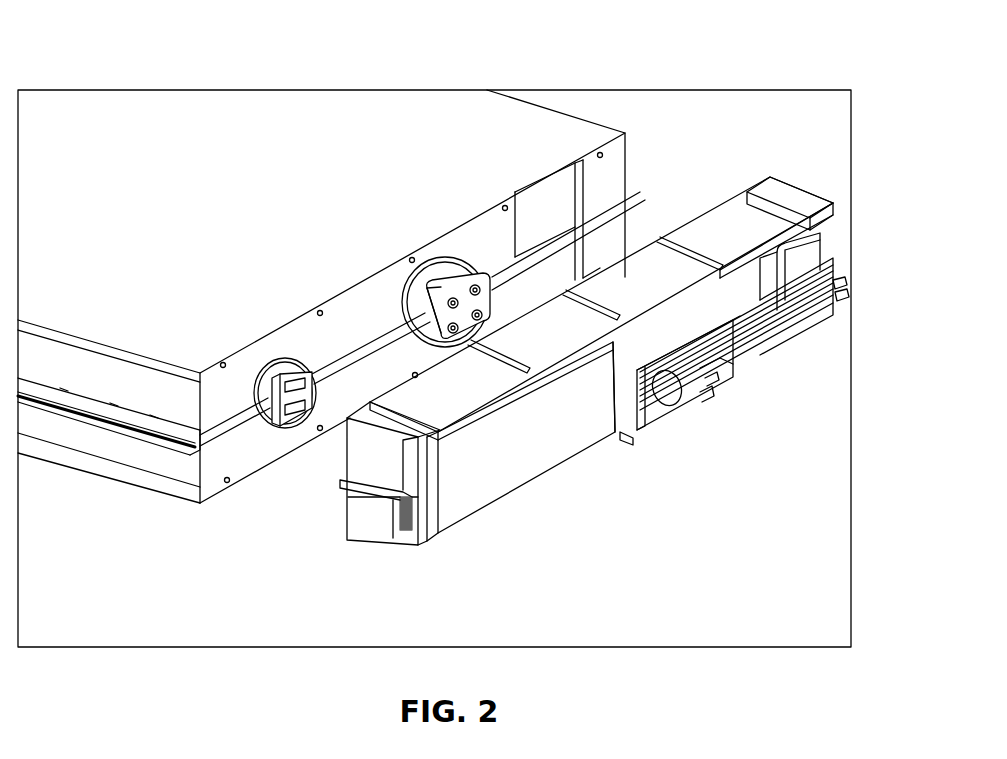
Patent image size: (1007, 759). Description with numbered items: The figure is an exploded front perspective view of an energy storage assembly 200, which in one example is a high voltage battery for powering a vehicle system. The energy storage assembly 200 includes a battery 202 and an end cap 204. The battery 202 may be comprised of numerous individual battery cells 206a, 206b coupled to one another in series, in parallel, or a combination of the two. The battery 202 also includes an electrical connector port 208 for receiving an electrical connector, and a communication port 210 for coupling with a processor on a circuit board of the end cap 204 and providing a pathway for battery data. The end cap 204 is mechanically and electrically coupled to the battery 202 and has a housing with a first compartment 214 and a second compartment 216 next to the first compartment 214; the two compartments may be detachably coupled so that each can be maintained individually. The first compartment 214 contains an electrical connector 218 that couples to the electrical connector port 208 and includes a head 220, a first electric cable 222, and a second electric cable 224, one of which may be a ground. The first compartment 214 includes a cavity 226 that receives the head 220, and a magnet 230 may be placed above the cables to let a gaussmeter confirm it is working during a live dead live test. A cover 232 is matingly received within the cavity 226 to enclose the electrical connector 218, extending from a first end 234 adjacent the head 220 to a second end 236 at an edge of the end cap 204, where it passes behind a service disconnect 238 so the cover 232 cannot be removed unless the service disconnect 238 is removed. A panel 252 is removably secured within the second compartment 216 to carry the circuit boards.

The energy storage assembly 200 is at (713, 65).
The battery 202 is at (513, 110).
The end cap 204 is at (820, 177).
The battery cell 206a is at (618, 163).
The battery cell 206b is at (235, 470).
The electrical connector port 208 is at (430, 243).
The communication port 210 is at (270, 352).
The first compartment 214 is at (795, 415).
The second compartment 216 is at (505, 547).
The electrical connector 218 is at (663, 465).
The head 220 is at (672, 423).
The first electric cable 222 is at (845, 280).
The second electric cable 224 is at (847, 294).
The cavity 226 is at (705, 405).
The magnet 230 is at (790, 330).
The cover 232 is at (710, 378).
The first end 234 is at (627, 433).
The second end 236 is at (833, 305).
The service disconnect 238 is at (808, 256).
The panel 252 is at (457, 500).